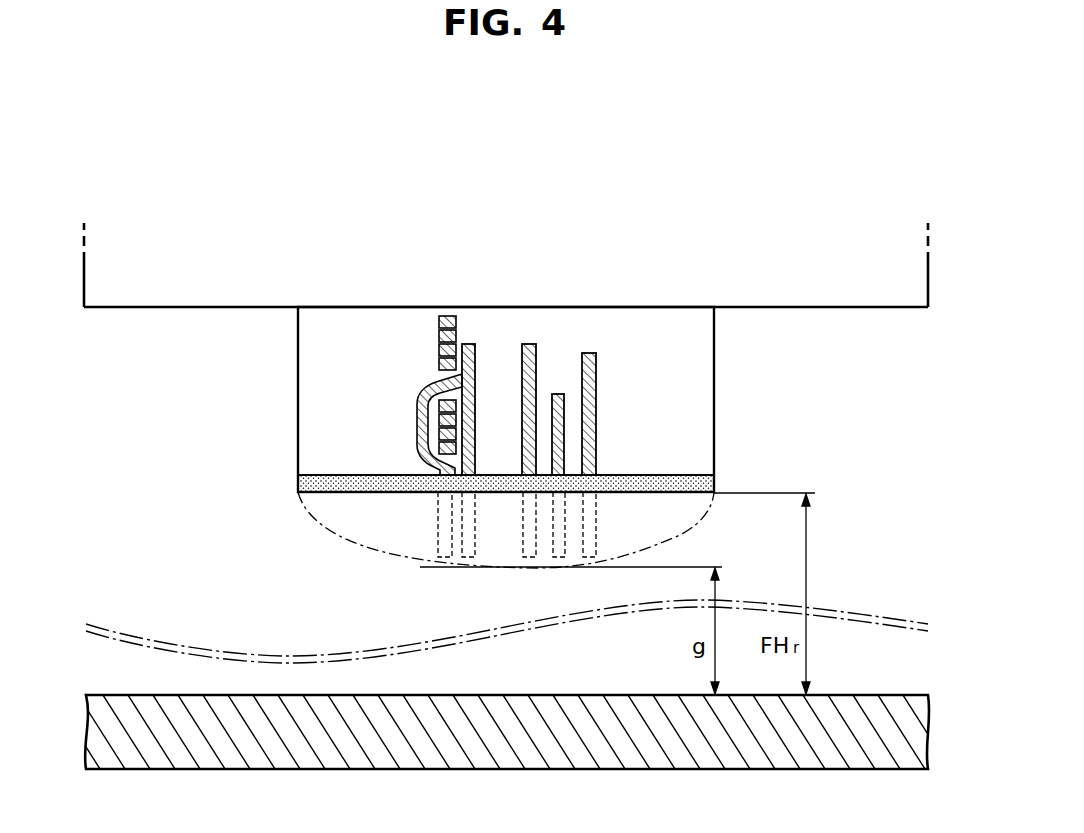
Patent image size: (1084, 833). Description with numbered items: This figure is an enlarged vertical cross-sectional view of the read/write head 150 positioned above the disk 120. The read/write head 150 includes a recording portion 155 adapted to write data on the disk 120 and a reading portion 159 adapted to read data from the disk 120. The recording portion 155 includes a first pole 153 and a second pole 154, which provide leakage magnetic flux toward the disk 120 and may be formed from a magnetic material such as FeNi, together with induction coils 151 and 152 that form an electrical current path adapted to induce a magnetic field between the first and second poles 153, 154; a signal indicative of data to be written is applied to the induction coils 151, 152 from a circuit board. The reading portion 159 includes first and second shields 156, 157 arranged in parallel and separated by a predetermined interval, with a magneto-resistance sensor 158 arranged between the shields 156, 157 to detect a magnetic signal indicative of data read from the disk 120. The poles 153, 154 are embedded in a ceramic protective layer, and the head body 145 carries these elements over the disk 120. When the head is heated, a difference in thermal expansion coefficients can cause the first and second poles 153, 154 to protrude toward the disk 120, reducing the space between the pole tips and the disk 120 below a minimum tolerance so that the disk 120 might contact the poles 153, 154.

The disk 120 is at (862, 708).
The slider 145 is at (101, 310).
The read/write head 150 is at (222, 399).
The induction coil 151 is at (438, 335).
The induction coil 152 is at (438, 447).
The first pole 153 is at (419, 415).
The second pole 154 is at (469, 343).
The recording portion 155 is at (477, 240).
The first shield 156 is at (532, 343).
The second shield 157 is at (597, 379).
The magneto-resistance (MR) sensor 158 is at (557, 393).
The reading portion 159 is at (662, 240).